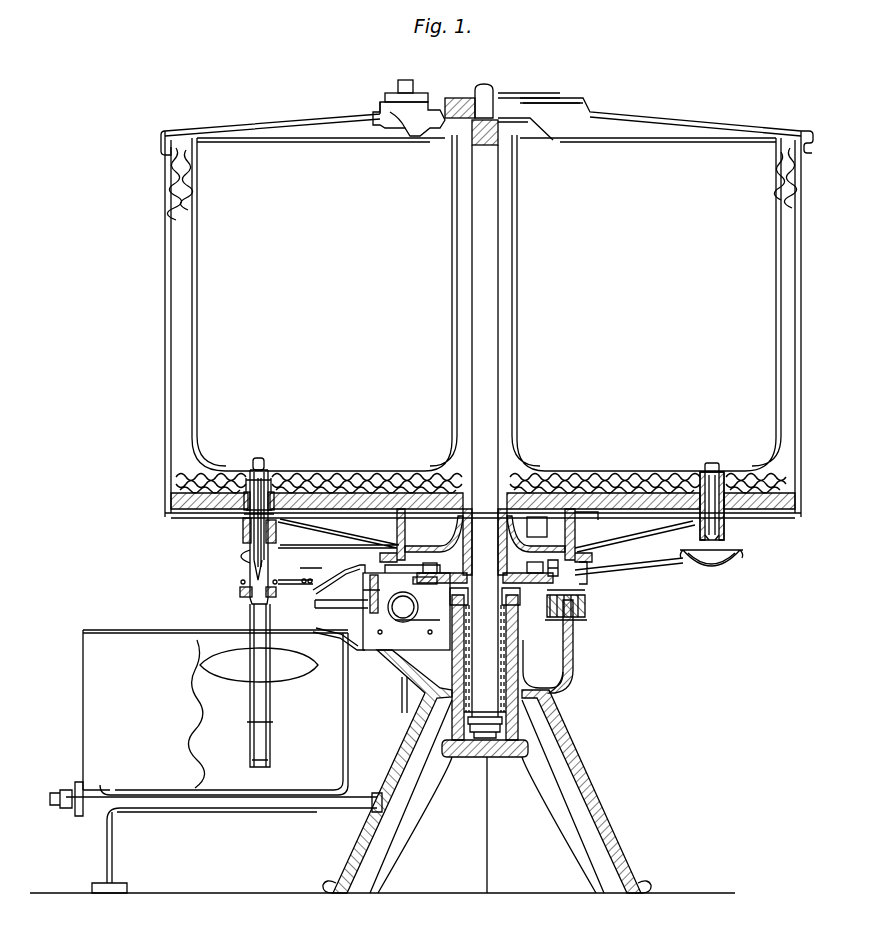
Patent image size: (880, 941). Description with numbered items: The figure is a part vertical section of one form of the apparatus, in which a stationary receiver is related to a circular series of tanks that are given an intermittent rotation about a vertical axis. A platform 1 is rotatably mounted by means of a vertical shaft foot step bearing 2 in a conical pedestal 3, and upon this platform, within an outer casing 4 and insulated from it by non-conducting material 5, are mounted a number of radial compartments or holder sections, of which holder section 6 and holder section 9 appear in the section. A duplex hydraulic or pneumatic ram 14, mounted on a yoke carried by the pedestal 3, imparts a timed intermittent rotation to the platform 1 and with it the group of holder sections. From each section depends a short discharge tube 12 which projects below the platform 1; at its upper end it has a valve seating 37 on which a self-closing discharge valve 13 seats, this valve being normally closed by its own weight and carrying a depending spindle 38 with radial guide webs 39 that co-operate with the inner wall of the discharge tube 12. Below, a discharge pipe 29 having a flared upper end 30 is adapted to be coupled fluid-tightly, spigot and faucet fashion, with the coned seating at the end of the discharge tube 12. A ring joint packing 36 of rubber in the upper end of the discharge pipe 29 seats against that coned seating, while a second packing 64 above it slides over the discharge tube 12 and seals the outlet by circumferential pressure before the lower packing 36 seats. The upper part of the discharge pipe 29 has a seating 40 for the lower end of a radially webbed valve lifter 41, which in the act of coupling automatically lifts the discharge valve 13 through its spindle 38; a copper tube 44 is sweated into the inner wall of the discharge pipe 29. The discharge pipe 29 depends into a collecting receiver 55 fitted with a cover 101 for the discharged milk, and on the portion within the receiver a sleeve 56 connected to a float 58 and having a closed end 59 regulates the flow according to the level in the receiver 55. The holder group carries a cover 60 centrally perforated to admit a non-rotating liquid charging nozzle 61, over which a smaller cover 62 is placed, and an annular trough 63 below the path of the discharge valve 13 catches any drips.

The platform 1 is at (595, 515).
The vertical shaft foot step bearing 2 is at (508, 703).
The conical pedestal 3 is at (585, 783).
The outer casing 4 is at (165, 348).
The non-conducting material 5 is at (762, 480).
The holder section 6 is at (319, 314).
The holder section 9 is at (648, 314).
The discharge tube 12 is at (247, 515).
The self-closing discharge valve 13 is at (253, 462).
The duplex hydraulic or pneumatic ram 14 is at (406, 622).
The discharge pipe 29 is at (252, 578).
The flared upper end 30 is at (277, 540).
The ring joint packing 36 is at (249, 555).
The valve seating 37 is at (266, 475).
The depending spindle 38 is at (268, 490).
The radial guide webs 39 is at (270, 505).
The seating 40 is at (265, 595).
The radially webbed valve lifter 41 is at (273, 567).
The tube 44 is at (253, 612).
The collecting receiver 55 is at (346, 747).
The sleeve 56 is at (268, 718).
The float 58 is at (290, 668).
The closed end 59 is at (262, 770).
The cover 60 is at (605, 115).
The liquid charging nozzle 61 is at (414, 137).
The smaller cover 62 is at (535, 100).
The annular trough 63 is at (703, 570).
The second packing 64 is at (248, 530).
The cover 101 is at (133, 629).